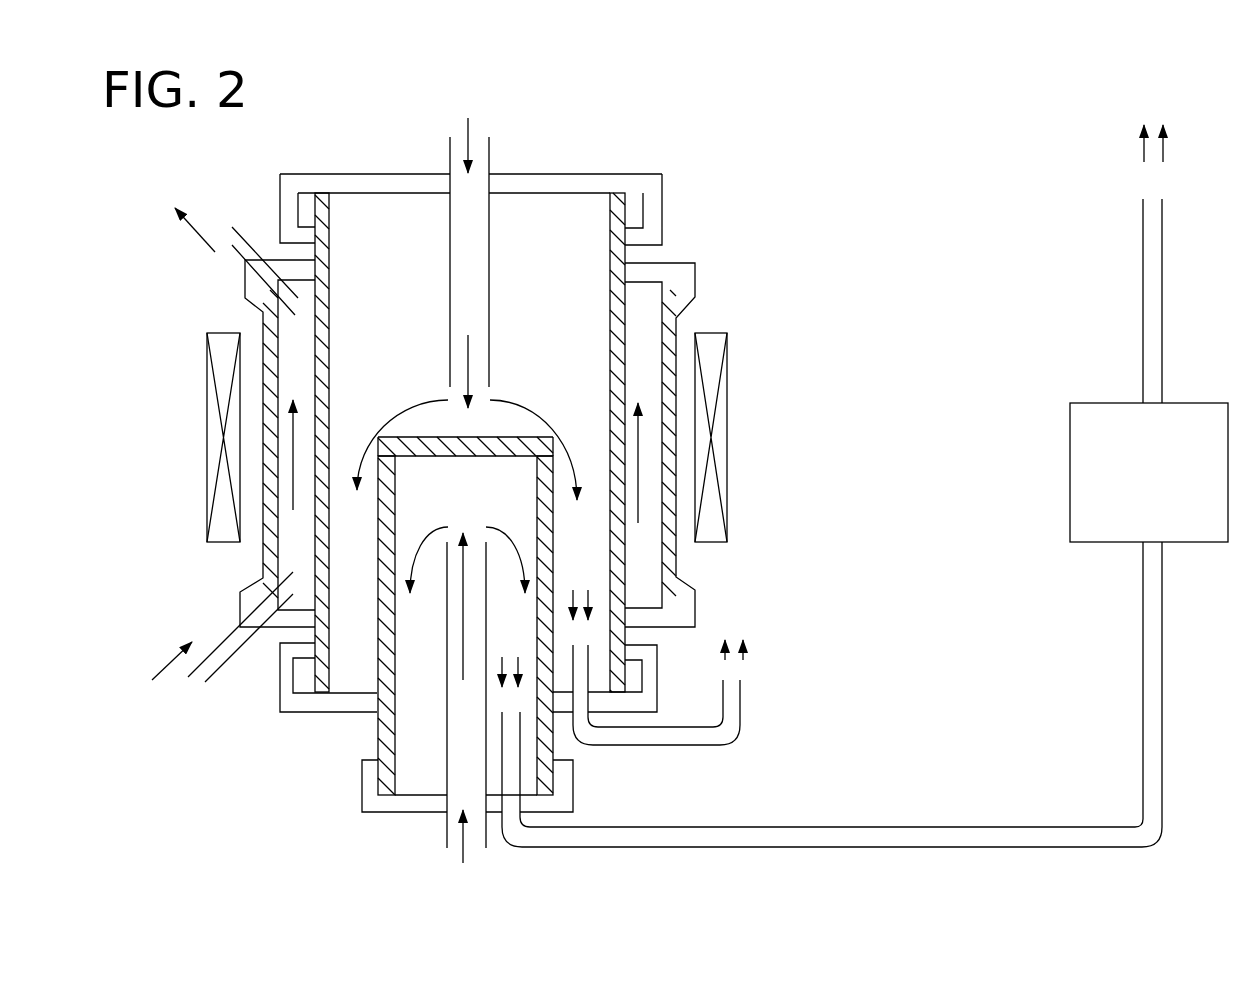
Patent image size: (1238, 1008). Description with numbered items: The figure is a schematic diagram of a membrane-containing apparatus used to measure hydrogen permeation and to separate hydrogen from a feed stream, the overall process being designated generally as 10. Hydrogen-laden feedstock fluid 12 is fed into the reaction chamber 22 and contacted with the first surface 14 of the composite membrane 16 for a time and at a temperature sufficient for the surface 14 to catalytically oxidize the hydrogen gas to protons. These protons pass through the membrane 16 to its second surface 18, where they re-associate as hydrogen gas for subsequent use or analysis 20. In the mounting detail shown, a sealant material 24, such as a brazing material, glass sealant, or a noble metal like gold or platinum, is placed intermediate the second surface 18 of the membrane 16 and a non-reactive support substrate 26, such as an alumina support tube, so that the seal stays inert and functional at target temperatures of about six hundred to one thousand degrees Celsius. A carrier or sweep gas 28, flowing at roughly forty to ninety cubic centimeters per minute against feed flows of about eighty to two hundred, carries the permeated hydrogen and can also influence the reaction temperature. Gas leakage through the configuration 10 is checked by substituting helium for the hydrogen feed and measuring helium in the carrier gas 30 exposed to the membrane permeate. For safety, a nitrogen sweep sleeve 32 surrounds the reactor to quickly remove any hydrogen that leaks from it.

The process 10 is at (862, 135).
The hydrogen-laden feedstock fluid 12 is at (478, 140).
The first surface 14 is at (515, 437).
The composite membrane 16 is at (568, 446).
The second surface 18 is at (433, 458).
The subsequent use or analysis 20 is at (1101, 528).
The reaction chamber 22 is at (373, 232).
The sealant material 24 is at (531, 449).
The non-reactive support substrate 26 is at (552, 560).
The sweep gas 28 is at (473, 850).
The carrier gas 30 is at (510, 706).
The nitrogen sweep sleeve 32 is at (653, 335).